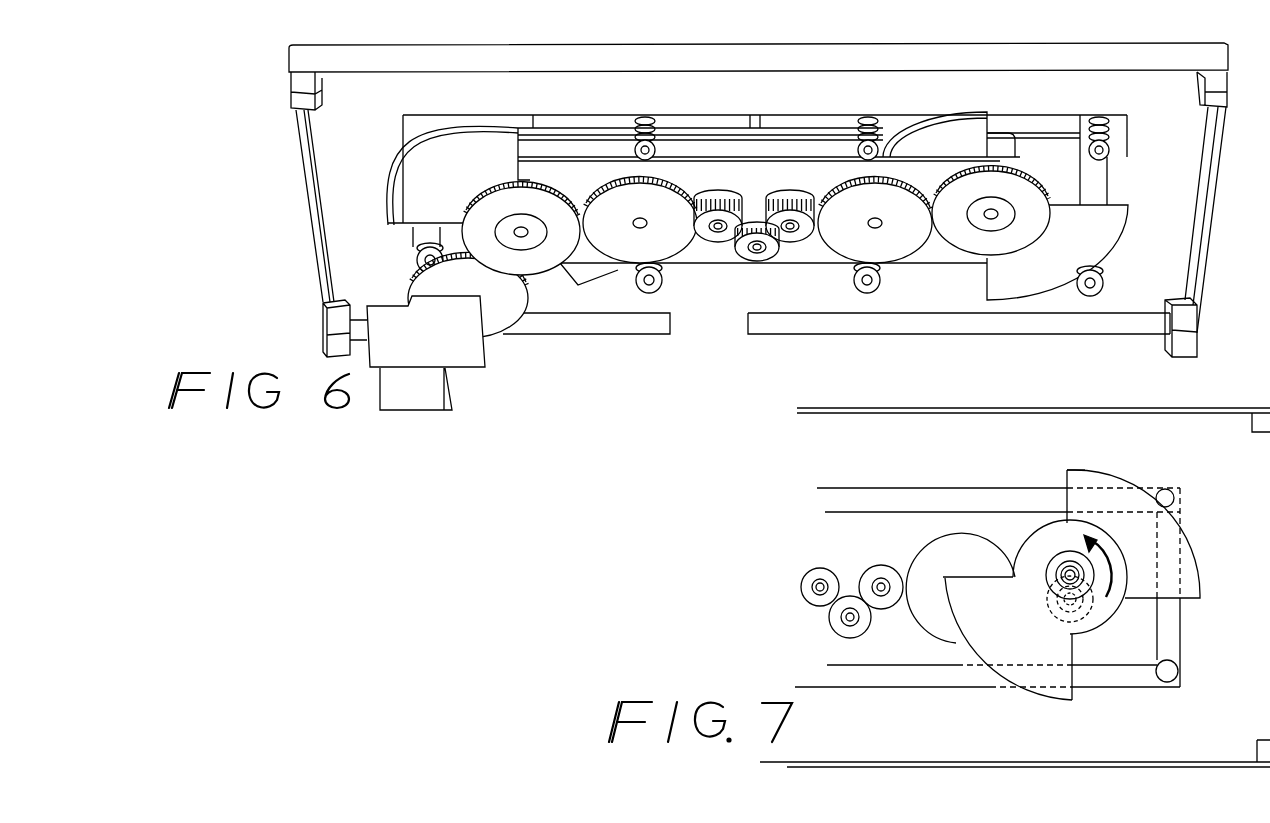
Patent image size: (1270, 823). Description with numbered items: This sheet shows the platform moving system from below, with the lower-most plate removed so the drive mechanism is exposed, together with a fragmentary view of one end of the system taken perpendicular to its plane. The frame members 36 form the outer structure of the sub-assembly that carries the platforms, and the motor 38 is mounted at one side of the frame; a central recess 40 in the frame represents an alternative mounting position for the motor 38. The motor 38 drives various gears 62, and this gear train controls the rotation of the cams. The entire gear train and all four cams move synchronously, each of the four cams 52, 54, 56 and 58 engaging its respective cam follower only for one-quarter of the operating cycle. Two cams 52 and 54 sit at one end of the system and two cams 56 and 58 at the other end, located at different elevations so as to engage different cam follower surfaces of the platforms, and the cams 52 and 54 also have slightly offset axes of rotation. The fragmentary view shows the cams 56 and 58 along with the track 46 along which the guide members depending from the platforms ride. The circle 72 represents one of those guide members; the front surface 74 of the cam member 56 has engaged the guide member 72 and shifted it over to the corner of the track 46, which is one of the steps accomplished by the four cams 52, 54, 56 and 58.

In FIG. 6, the frame members 36 is at (610, 57).
In FIG. 7, the frame members 36 is at (953, 408).
In FIG. 6, the motor 38 is at (423, 392).
In FIG. 6, the central recess 40 is at (697, 328).
In FIG. 7, the track 46 is at (944, 500).
In FIG. 6, the cam 52 is at (968, 127).
In FIG. 6, the cam 54 is at (1078, 270).
In FIG. 7, the cam member 56 is at (1173, 566).
In FIG. 6, the cam 58 is at (462, 192).
In FIG. 7, the cam 58 is at (1040, 693).
In FIG. 6, the gears 62 is at (792, 196).
In FIG. 7, the guide member 72 is at (1172, 500).
In FIG. 7, the front surface 74 is at (1067, 478).